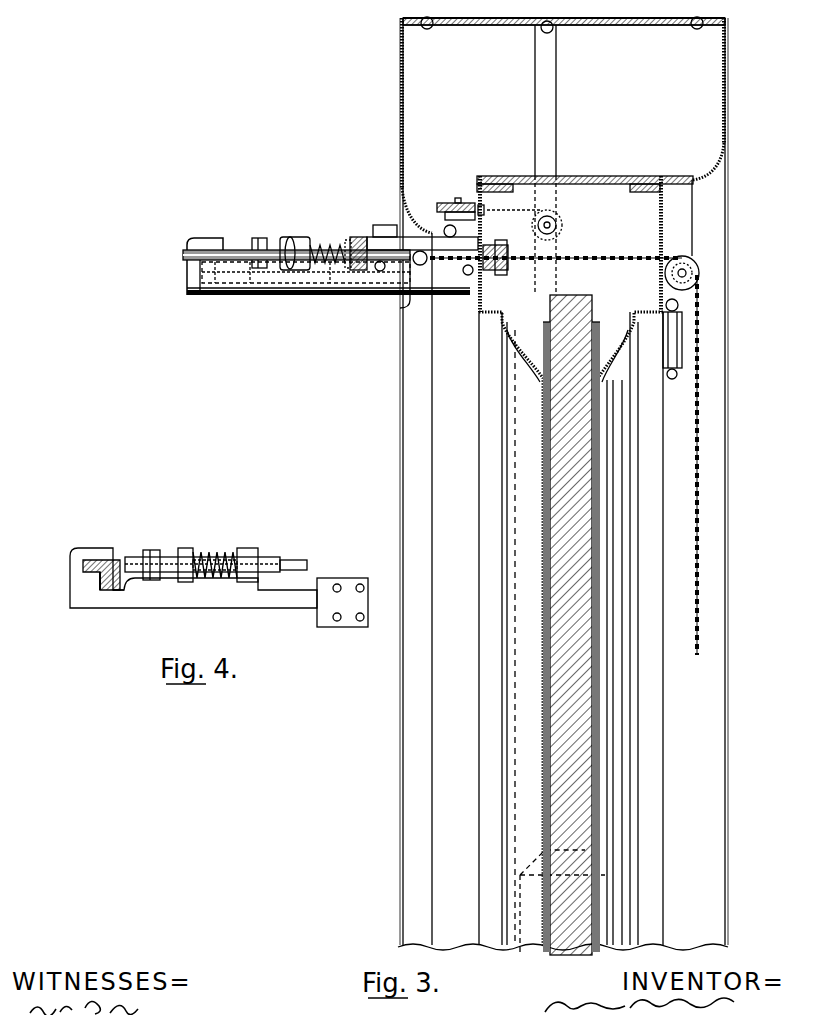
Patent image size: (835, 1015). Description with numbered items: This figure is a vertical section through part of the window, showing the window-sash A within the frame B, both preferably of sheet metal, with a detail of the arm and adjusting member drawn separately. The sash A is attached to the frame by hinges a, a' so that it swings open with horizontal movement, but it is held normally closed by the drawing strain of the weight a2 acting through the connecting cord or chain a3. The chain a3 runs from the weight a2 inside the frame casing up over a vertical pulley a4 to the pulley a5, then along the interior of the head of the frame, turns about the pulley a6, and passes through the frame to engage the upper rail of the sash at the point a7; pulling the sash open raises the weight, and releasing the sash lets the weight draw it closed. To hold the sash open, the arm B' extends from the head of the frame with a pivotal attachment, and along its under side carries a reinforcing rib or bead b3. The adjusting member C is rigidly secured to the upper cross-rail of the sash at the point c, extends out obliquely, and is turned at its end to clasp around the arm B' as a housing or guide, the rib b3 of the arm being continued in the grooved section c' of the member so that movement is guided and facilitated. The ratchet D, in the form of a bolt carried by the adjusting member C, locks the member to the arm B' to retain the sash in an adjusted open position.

In FIG. 3, the window-sash A is at (512, 600).
In FIG. 3, the frame B is at (563, 486).
In FIG. 4, the arm B' is at (76, 575).
In FIG. 4, the reinforcing rib or bead b3 is at (100, 586).
In FIG. 3, the adjusting member C is at (337, 285).
In FIG. 4, the adjusting member C is at (218, 600).
In FIG. 3, the point of attachment c is at (565, 560).
In FIG. 4, the grooved section c' is at (108, 613).
In FIG. 3, the ratchet D is at (405, 308).
In FIG. 4, the ratchet D is at (270, 562).
In FIG. 3, the hinge a is at (379, 236).
In FIG. 4, the hinge a is at (220, 553).
In FIG. 3, the hinge a' is at (338, 242).
In FIG. 4, the hinge a' is at (222, 541).
In FIG. 3, the weight a2 is at (318, 244).
In FIG. 4, the weight a2 is at (204, 546).
In FIG. 3, the connecting cord or chain a3 is at (558, 243).
In FIG. 3, the vertical pulley a4 is at (561, 225).
In FIG. 3, the pulley a5 is at (700, 272).
In FIG. 3, the pulley a6 is at (440, 208).
In FIG. 4, the pulley a6 is at (153, 550).
In FIG. 3, the point of engagement a7 is at (484, 214).